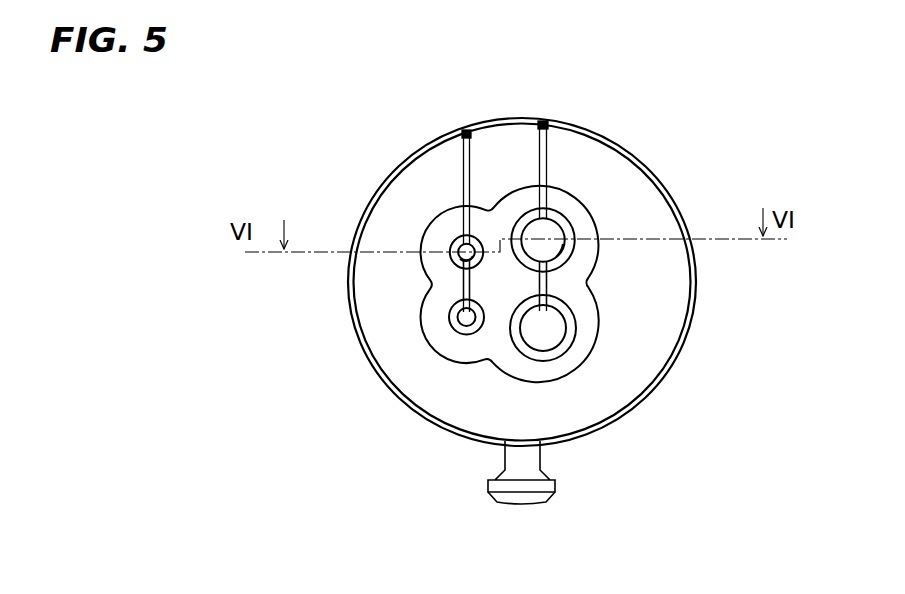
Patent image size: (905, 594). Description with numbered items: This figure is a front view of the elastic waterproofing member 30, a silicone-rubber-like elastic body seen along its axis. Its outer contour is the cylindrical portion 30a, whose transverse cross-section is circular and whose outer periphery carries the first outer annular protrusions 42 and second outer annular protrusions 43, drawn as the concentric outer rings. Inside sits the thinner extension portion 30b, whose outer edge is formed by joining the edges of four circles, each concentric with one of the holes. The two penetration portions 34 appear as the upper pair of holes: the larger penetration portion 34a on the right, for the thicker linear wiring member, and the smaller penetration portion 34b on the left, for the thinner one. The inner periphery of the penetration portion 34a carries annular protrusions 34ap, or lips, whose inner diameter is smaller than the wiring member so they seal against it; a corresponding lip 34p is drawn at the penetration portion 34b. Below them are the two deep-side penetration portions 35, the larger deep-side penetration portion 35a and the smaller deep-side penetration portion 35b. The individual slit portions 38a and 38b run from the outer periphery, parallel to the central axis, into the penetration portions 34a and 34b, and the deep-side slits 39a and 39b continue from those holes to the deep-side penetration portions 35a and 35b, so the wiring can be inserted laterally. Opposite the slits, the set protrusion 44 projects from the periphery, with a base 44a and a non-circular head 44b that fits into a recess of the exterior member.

The elastic waterproofing member 30 is at (626, 144).
The cylindrical portion 30a is at (649, 173).
The extension portion 30b is at (595, 212).
The penetration portions 34 is at (473, 179).
The penetration portion 34a is at (556, 209).
The penetration portion 34b is at (452, 247).
The annular protrusions 34ap is at (563, 250).
The inner peripheral surface of second hole 34p is at (457, 264).
The deep-side penetration portions 35 is at (537, 382).
The deep-side penetration portion 35a is at (562, 348).
The deep-side penetration portion 35b is at (452, 330).
The individual slit portion 38a is at (538, 147).
The individual slit portion 38b is at (462, 155).
The deep-side slit 39a is at (551, 286).
The deep-side slit 39b is at (455, 285).
The first outer annular protrusions 42 is at (564, 282).
The second outer annular protrusions 43 is at (673, 198).
The set protrusion 44 is at (578, 491).
The base 44a is at (541, 463).
The head 44b is at (543, 498).